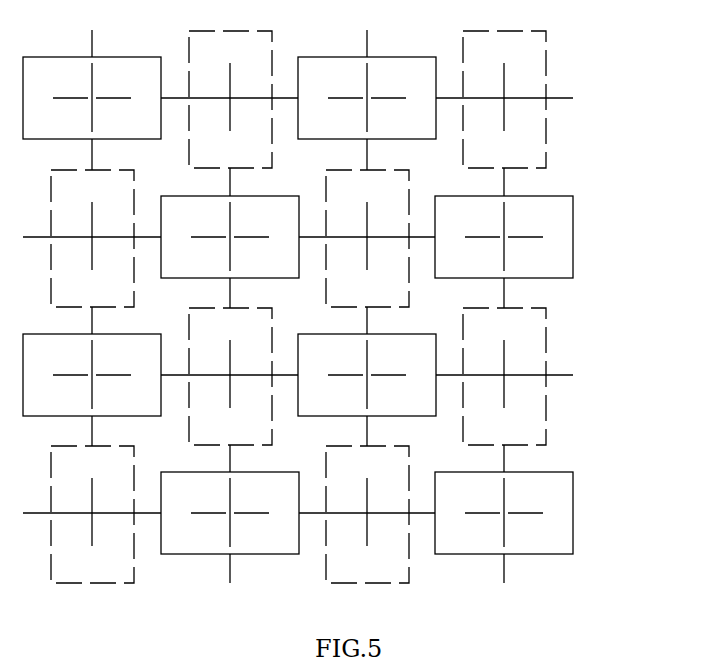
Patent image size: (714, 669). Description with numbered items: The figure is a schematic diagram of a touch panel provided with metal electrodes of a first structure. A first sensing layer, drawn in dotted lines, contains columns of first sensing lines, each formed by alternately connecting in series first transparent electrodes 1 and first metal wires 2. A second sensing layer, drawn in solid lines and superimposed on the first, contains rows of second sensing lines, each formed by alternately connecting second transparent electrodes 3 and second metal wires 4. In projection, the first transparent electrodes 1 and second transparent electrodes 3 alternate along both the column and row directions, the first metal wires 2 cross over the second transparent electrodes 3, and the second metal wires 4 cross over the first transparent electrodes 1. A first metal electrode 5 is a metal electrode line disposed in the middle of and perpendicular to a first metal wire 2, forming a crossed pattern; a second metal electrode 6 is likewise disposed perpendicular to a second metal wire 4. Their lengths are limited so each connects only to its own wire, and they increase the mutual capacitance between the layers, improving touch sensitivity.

The first transparent electrode 1 is at (562, 99).
The first metal wire 2 is at (579, 226).
The second transparent electrode 3 is at (551, 277).
The second metal wire 4 is at (480, 344).
The first metal electrode 5 is at (566, 562).
The second metal electrode 6 is at (159, 545).